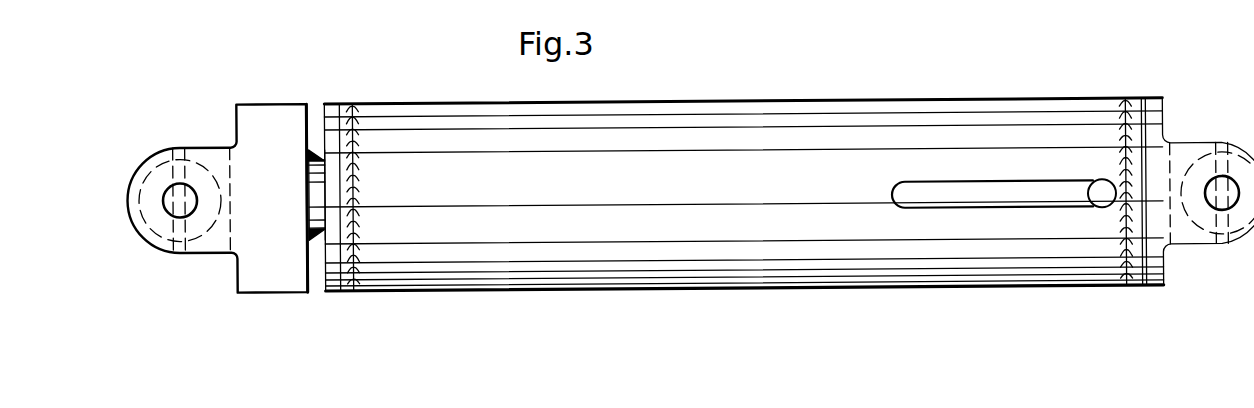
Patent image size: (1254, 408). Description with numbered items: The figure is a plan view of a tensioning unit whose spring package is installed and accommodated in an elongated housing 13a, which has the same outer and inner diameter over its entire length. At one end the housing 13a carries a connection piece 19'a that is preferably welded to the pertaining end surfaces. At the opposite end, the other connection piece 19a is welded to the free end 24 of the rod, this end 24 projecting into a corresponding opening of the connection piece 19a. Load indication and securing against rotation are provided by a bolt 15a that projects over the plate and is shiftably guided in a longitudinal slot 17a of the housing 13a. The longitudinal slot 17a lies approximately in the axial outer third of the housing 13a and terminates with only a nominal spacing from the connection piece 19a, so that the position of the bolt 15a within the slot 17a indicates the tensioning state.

The housing 13a is at (531, 295).
The bolt 15a is at (1102, 200).
The longitudinal slot 17a is at (1008, 202).
The connection piece 19a is at (260, 267).
The connection piece 19'a is at (1202, 216).
The free end of the rod 24 is at (317, 232).